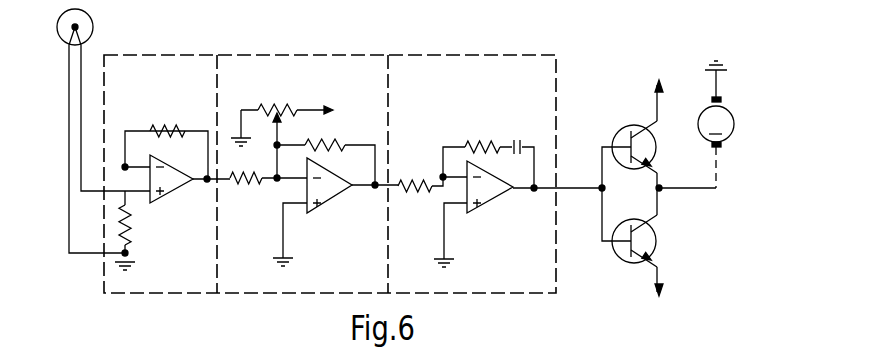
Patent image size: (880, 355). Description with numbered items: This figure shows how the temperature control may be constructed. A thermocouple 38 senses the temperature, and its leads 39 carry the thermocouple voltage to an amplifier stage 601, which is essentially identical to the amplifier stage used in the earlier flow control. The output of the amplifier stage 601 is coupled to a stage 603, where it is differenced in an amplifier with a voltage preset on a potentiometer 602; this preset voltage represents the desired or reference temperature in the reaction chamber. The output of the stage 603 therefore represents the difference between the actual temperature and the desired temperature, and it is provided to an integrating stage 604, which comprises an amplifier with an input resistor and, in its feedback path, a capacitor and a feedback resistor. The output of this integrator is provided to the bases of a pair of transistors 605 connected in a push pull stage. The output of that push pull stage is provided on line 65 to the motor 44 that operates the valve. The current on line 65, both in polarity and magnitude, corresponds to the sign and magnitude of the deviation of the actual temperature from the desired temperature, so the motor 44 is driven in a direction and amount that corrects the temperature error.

The thermocouple 38 is at (86, 27).
The sensor leads 39 is at (68, 179).
The amplifier stage 601 is at (173, 284).
The potentiometer 602 is at (270, 100).
The stage 603 is at (290, 282).
The integrating amplifier 604 is at (494, 274).
The transistors 605 is at (622, 130).
The line 65 is at (678, 190).
The motor 44 is at (750, 106).